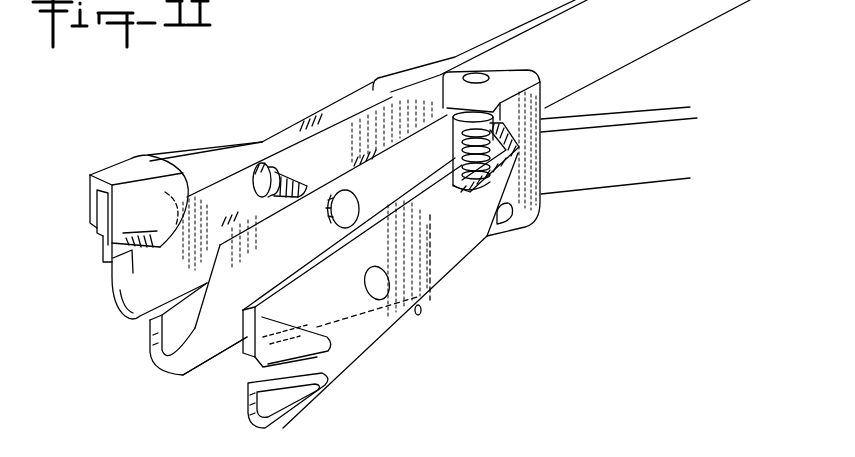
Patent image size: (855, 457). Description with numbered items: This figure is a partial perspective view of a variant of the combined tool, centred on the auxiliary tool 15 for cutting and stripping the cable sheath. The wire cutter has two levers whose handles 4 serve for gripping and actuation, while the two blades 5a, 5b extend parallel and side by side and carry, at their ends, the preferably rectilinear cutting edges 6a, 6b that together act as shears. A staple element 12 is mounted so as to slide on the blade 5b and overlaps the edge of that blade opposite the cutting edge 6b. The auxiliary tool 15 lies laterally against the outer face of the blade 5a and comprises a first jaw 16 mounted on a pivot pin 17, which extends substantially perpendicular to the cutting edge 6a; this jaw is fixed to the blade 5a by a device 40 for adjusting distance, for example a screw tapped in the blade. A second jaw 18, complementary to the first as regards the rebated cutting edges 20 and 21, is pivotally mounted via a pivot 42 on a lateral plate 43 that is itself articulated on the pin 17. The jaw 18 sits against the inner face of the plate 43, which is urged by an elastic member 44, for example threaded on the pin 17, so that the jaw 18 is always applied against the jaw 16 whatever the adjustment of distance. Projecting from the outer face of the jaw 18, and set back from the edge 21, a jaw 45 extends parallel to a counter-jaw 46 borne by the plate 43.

The handles 4 is at (290, 178).
The blade 5a is at (623, 43).
The blade 5b is at (657, 167).
The cutting edge 6a is at (113, 297).
The cutting edge 6b is at (103, 262).
The staple element 12 is at (115, 165).
The auxiliary tool 15 is at (466, 278).
The first jaw 16 is at (236, 270).
The pivot pin 17 is at (472, 78).
The second jaw 18 is at (300, 300).
The rebated cutting edge 20 is at (157, 357).
The rebated cutting edge 21 is at (252, 370).
The device for adjusting distance 40 is at (303, 171).
The pivot 42 is at (380, 278).
The lateral plate 43 is at (445, 260).
The elastic member 44 is at (470, 168).
The jaw 45 is at (323, 353).
The counter-jaw 46 is at (307, 392).